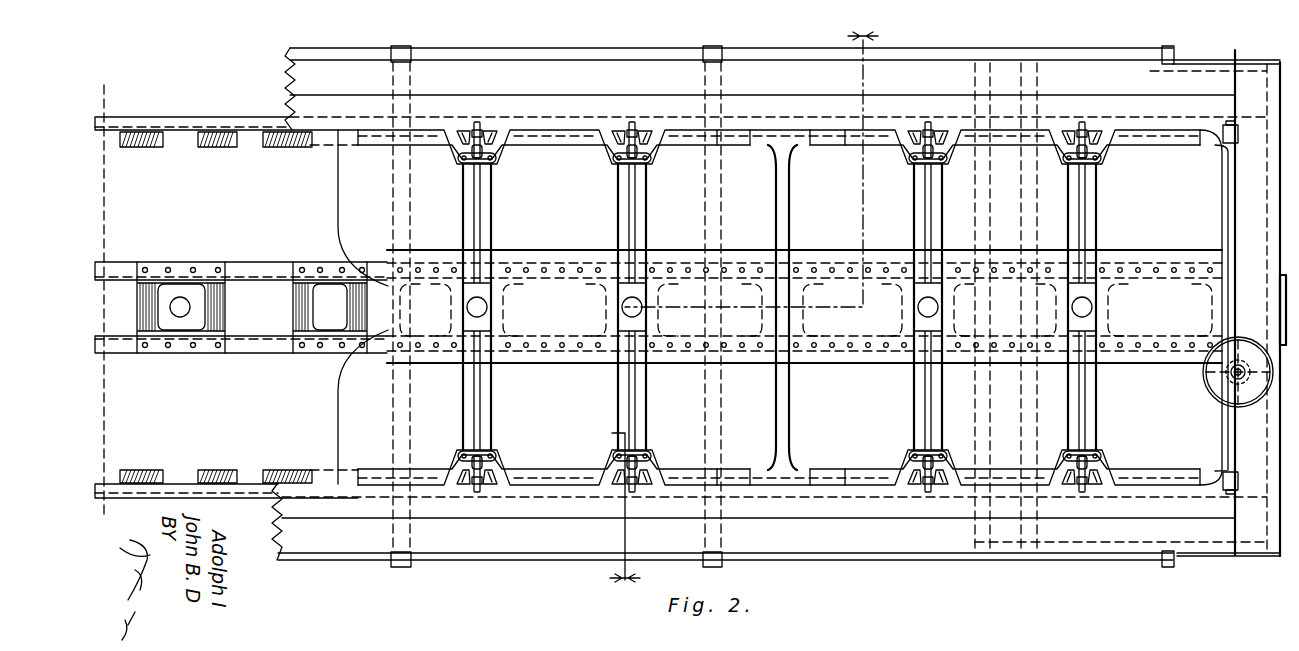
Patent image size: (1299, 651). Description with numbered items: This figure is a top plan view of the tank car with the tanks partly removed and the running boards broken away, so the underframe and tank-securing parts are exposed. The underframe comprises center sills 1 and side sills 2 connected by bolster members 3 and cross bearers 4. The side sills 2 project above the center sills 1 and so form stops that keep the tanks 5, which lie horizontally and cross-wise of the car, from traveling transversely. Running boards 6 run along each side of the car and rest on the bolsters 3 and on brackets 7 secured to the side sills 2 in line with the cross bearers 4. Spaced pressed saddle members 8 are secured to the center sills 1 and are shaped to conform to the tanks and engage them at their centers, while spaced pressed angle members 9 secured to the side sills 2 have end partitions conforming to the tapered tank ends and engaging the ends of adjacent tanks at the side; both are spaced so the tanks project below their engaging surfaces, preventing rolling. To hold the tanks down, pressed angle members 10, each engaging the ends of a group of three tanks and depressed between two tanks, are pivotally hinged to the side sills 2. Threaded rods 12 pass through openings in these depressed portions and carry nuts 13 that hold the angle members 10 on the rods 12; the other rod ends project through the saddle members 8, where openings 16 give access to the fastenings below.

The center sills 1 is at (840, 262).
The side sills 2 is at (240, 117).
The bolster members 3 is at (1027, 217).
The cross bearers 4 is at (411, 205).
The tanks 5 is at (338, 410).
The running boards 6 is at (632, 78).
The brackets 7 is at (412, 80).
The saddle members 8 is at (190, 333).
The angle members 9 is at (185, 147).
The pressed angle members 10 is at (590, 136).
The threaded rods 12 is at (491, 218).
The nuts 13 is at (477, 132).
The openings 16 is at (185, 300).